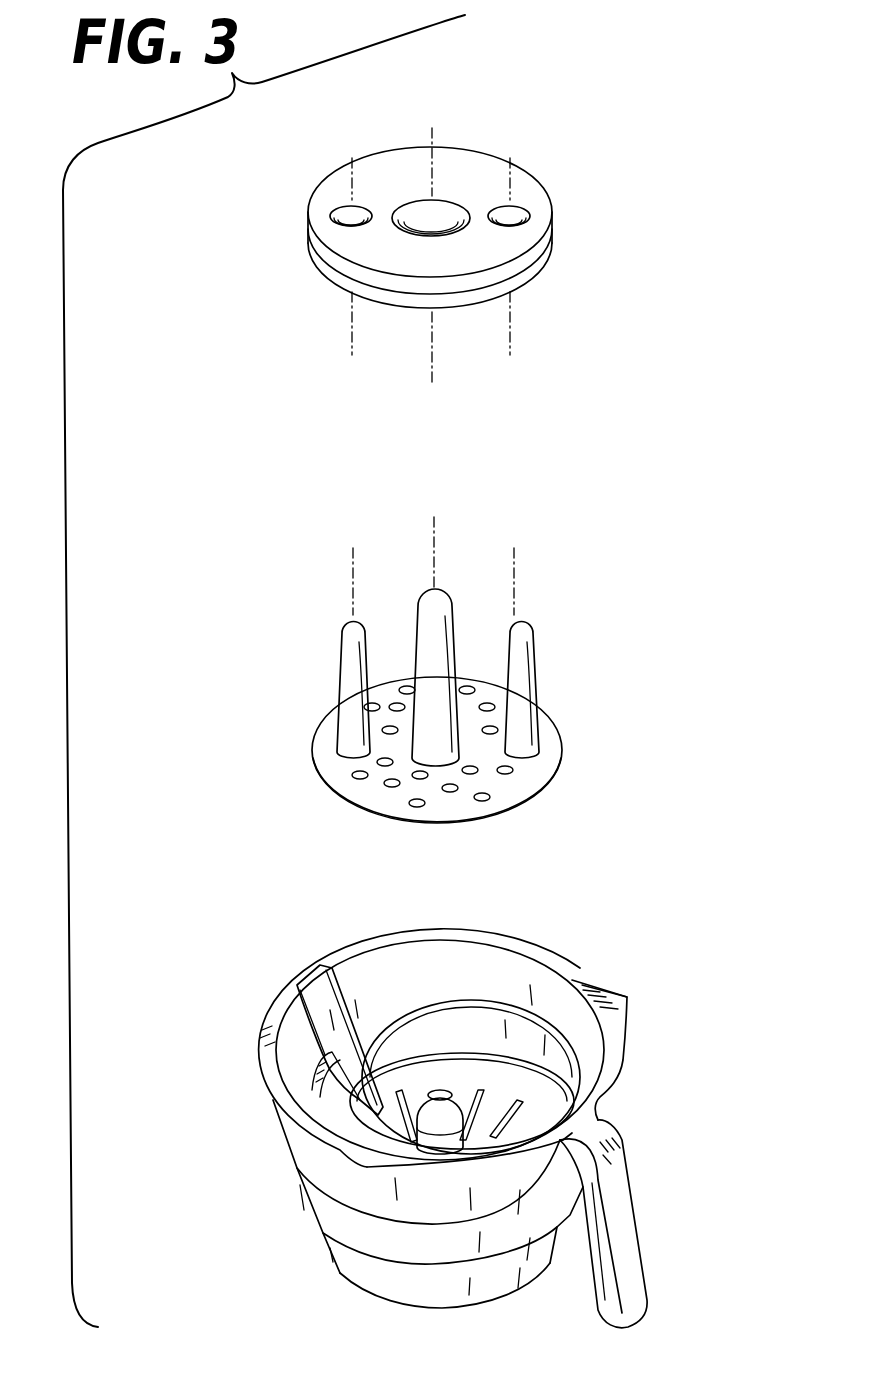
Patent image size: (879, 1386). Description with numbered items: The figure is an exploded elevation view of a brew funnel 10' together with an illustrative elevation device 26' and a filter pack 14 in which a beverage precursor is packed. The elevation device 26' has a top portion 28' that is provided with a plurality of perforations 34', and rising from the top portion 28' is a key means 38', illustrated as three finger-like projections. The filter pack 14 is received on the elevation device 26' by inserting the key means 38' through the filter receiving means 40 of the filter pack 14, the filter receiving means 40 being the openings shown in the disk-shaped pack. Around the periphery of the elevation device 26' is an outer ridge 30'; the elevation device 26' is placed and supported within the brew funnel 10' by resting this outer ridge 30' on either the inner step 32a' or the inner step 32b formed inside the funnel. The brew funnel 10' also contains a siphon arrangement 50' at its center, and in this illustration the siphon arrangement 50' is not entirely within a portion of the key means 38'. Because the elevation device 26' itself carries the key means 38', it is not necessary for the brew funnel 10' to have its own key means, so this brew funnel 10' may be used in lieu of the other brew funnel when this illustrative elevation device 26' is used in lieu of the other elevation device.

The filter pack 14 is at (540, 198).
The filter receiving means 40 is at (502, 208).
The elevation device 26' is at (388, 671).
The top portion 28' is at (399, 752).
The outer ridge 30' is at (437, 815).
The perforations 34' is at (473, 759).
The key means 38' is at (438, 618).
The brew funnel 10' is at (383, 1120).
The inner step 32b is at (535, 1018).
The inner step 32a' is at (550, 1057).
The siphon arrangement 50' is at (335, 1093).